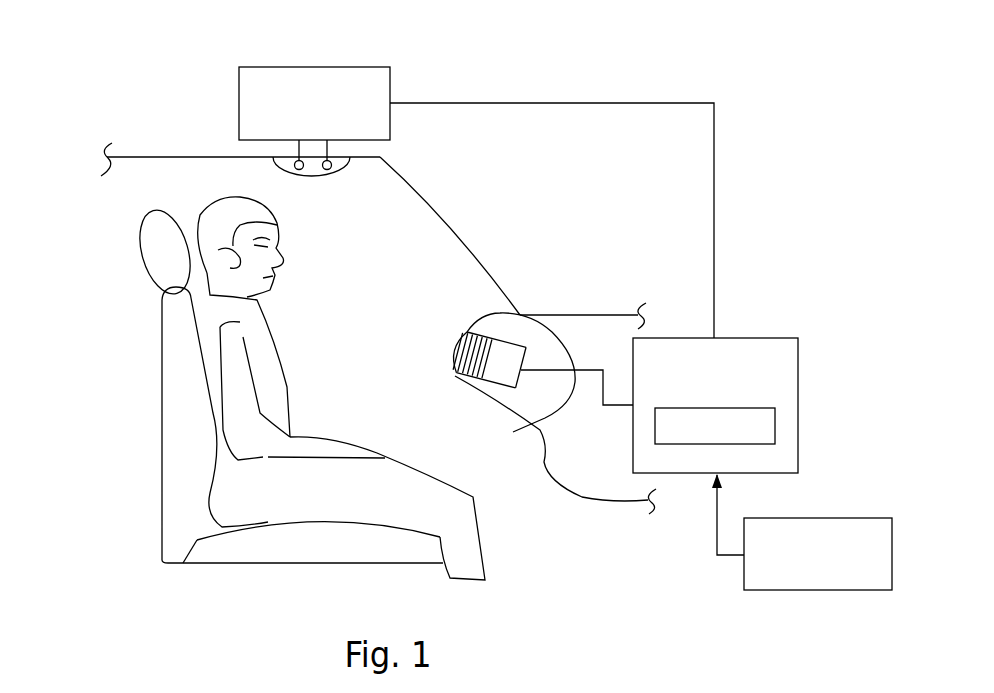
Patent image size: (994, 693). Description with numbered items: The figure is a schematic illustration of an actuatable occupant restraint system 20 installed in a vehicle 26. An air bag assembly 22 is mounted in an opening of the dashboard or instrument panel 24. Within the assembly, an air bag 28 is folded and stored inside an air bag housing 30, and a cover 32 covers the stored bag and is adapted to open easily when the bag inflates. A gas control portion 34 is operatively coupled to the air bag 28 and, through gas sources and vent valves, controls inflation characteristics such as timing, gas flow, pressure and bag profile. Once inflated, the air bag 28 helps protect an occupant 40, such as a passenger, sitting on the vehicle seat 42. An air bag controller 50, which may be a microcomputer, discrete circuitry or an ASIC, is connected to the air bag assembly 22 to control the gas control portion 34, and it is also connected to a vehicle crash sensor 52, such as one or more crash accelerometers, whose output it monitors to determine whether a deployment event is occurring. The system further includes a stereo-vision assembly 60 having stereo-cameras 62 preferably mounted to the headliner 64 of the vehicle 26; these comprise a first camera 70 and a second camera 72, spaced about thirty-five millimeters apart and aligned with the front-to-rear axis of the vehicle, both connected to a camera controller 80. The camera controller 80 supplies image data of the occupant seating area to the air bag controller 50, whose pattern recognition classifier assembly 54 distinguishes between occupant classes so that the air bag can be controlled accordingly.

The actuatable occupant restraint system 20 is at (613, 70).
The air bag assembly 22 is at (505, 330).
The instrument panel 24 is at (490, 315).
The vehicle 26 is at (185, 157).
The air bag 28 is at (460, 377).
The air bag housing 30 is at (495, 392).
The cover 32 is at (455, 348).
The gas control portion 34 is at (512, 384).
The occupant 40 is at (264, 318).
The vehicle seat 42 is at (162, 372).
The air bag controller 50 is at (765, 338).
The vehicle crash sensor 52 is at (823, 518).
The pattern recognition classifier assembly 54 is at (717, 444).
The stereo-vision assembly 60 is at (167, 53).
The stereo-cameras 62 is at (278, 170).
The headliner 64 is at (205, 157).
The first camera 70 is at (299, 178).
The second camera 72 is at (330, 172).
The camera controller 80 is at (373, 67).